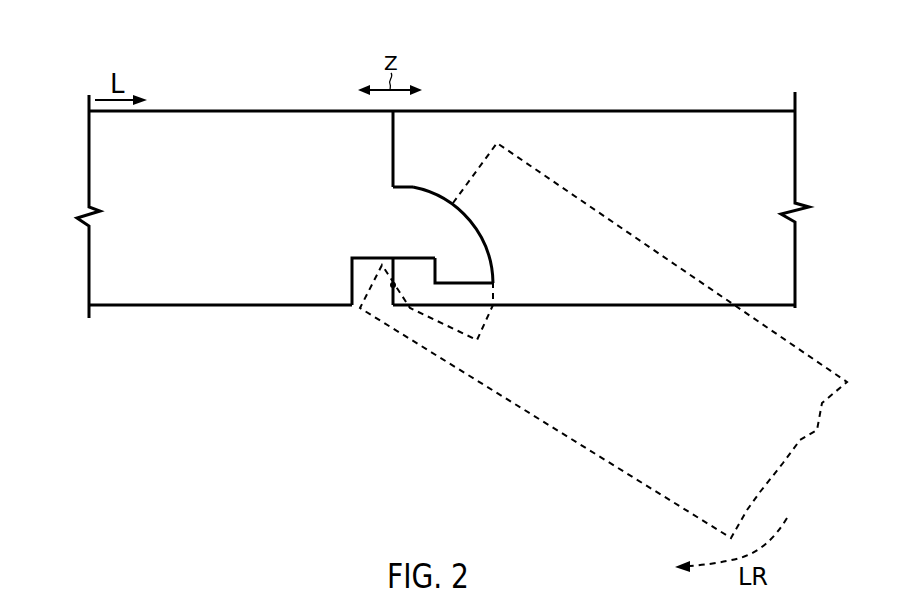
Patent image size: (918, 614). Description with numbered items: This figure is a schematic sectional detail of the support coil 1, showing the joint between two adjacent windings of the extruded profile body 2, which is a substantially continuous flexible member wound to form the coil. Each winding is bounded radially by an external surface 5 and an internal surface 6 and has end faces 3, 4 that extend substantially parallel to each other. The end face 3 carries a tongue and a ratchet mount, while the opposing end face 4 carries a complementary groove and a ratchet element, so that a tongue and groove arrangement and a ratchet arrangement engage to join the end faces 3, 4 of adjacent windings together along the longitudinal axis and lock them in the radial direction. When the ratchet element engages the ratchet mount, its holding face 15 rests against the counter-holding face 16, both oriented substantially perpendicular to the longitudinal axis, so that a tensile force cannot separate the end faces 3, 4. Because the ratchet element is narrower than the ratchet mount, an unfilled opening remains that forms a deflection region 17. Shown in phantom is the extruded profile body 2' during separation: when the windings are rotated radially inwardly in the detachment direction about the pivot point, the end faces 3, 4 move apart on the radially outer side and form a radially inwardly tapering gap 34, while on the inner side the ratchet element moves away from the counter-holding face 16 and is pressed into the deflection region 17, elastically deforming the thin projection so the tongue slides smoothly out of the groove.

The support coil 1 is at (76, 43).
The extruded profile body 2 is at (460, 213).
The extruded profile body during separation 2' is at (603, 340).
The end face 3 is at (393, 165).
The end face 4 is at (395, 150).
The external surface 5 is at (250, 111).
The internal surface 6 is at (205, 306).
The holding face 15 is at (430, 283).
The counter-holding face 16 is at (441, 262).
The deflection region 17 is at (365, 258).
The gap 34 is at (444, 130).